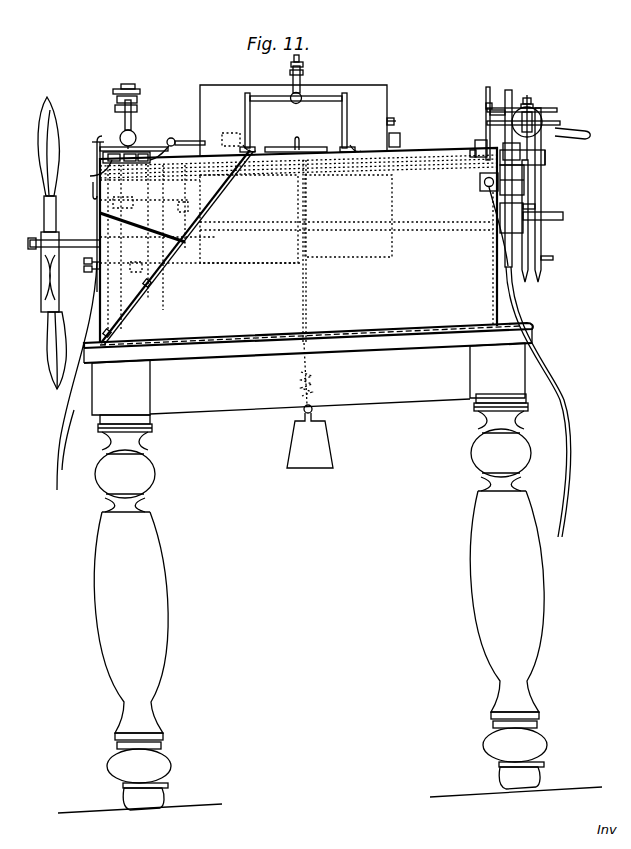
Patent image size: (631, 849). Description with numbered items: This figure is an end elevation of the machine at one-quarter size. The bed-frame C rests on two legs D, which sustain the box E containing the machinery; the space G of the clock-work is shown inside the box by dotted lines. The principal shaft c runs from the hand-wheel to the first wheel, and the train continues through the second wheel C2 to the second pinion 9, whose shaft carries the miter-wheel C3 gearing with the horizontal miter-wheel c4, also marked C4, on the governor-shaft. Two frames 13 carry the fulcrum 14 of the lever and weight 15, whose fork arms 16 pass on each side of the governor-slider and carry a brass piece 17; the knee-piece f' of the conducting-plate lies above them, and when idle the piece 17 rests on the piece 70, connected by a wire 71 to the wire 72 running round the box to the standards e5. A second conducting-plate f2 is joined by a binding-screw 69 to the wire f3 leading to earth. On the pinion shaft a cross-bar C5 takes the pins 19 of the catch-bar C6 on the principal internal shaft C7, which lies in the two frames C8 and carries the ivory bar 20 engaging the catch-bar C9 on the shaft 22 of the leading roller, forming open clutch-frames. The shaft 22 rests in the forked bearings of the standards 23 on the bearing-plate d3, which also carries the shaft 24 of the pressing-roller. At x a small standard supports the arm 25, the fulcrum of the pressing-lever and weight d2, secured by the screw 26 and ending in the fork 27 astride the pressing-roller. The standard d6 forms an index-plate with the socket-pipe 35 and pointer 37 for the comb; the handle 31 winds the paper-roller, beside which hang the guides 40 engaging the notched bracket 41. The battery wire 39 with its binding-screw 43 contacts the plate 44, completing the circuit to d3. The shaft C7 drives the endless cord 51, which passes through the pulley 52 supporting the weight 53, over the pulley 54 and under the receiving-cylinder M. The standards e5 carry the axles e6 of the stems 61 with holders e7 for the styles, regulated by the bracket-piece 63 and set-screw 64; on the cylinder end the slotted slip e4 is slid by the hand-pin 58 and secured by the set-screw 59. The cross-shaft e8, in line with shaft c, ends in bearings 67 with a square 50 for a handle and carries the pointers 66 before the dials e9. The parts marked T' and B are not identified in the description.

The bed-frame C is at (308, 368).
The legs D is at (319, 576).
The box E is at (298, 245).
The receiving-cylinder M is at (312, 129).
The standards e5 is at (252, 122).
The axles e6 is at (296, 93).
The stems 61 is at (301, 94).
The holders e7 is at (303, 73).
The bracket-piece 63 is at (303, 65).
The set-screw 64 is at (299, 57).
The pulley 54 is at (299, 140).
The slotted steel slips e4 is at (394, 119).
The guide and set-screw 59 is at (396, 121).
The hand-pin 58 is at (400, 139).
The wire 72 is at (140, 99).
The wire 71 is at (137, 109).
The fork arms 16 is at (145, 147).
The second pinion 9 is at (126, 162).
The miter-wheel C3 is at (128, 163).
The fulcrum 14 is at (165, 149).
The lever and weight 15 is at (207, 137).
The piece of brass 17 is at (96, 150).
The knee-piece f' is at (96, 133).
The piece 70 is at (92, 188).
The horizontal miter-wheel C4 is at (90, 176).
The propeller T' is at (52, 243).
The principal shaft c is at (64, 238).
The binding-screw 69 is at (92, 260).
The second conducting-plate f2 is at (94, 282).
The wire f3 is at (68, 426).
The clock-work space and frames G is at (130, 270).
The second wheel C2 is at (200, 247).
The frames C8 is at (284, 210).
The cross-shaft e8 is at (490, 223).
The bar B is at (142, 224).
The pointer 66 is at (500, 207).
The frames 13 is at (152, 173).
The pins 19 is at (166, 187).
The cross-bar C5 is at (186, 176).
The principal internal shaft C7 is at (180, 173).
The catch-bar C9 is at (187, 269).
The endless cord 51 is at (312, 251).
The pulley 52 is at (298, 374).
The weight 53 is at (310, 436).
The small standard x is at (476, 123).
The index-plate standard d6 is at (486, 106).
The socket-pipe 35 is at (490, 112).
The shaft 24 is at (557, 110).
The standards 23 is at (560, 123).
The pressing-lever and weight d2 is at (536, 111).
The arm 25 is at (519, 122).
The screw 26 is at (531, 94).
The pointer 37 is at (520, 101).
The handle 31 is at (590, 136).
The guides 40 is at (505, 246).
The bracket 41 is at (553, 259).
The shaft 22 is at (522, 154).
The binding-screw 43 is at (513, 180).
The plate 44 is at (513, 186).
The bearing-plate d3 is at (547, 162).
The bearings 67 is at (535, 207).
The square 50 is at (553, 213).
The fork 27 is at (476, 143).
The cross-bar 20 is at (465, 151).
The catch-bar C6 is at (446, 148).
The horizontal miter-wheel c4 is at (485, 151).
The dials e9 is at (493, 285).
The wire 39 is at (569, 425).